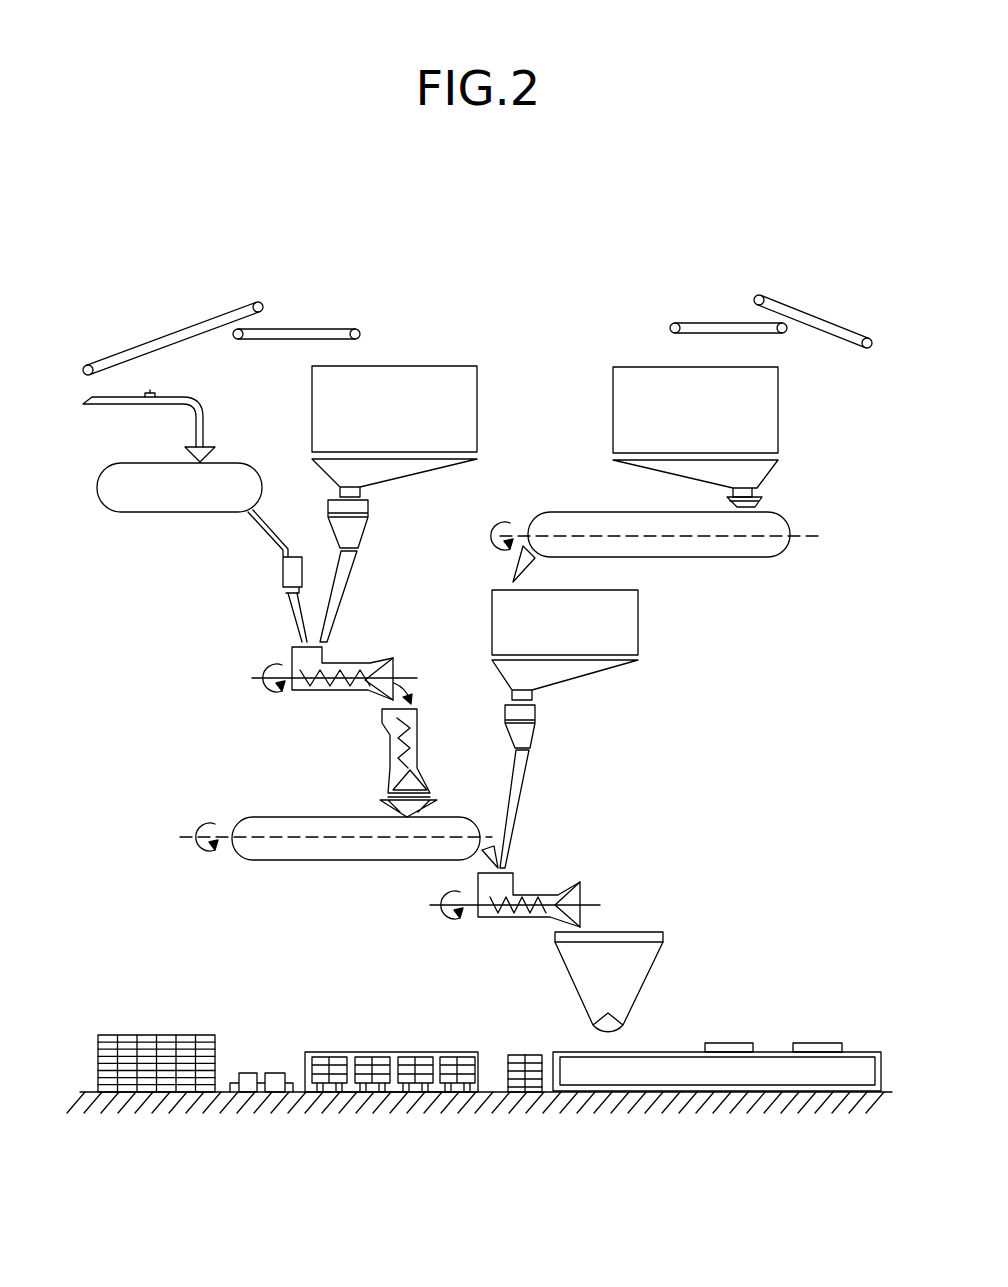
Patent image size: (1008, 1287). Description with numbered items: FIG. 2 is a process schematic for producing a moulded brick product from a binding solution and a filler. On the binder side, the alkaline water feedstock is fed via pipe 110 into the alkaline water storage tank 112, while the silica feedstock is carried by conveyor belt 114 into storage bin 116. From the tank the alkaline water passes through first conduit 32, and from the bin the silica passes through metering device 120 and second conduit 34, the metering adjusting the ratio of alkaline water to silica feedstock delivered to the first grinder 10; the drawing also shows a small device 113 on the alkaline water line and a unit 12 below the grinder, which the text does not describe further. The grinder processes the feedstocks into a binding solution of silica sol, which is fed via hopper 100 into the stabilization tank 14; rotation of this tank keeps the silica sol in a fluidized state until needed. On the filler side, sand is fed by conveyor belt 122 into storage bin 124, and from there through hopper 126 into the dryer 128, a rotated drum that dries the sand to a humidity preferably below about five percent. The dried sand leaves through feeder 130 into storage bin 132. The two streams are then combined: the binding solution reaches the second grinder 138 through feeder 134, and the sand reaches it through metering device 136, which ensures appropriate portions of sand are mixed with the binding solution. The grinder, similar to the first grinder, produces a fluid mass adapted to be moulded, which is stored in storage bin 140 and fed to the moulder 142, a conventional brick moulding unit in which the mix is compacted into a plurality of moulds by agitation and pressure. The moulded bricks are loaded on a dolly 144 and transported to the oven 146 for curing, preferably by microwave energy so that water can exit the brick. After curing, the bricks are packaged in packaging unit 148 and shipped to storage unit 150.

The first grinder 10 is at (355, 668).
The mixer 12 is at (392, 752).
The stabilization tank 14 is at (235, 818).
The first conduit 32 is at (292, 620).
The second conduit 34 is at (345, 600).
The hopper 100 is at (385, 810).
The pipe 110 is at (130, 407).
The alkaline water storage tank 112 is at (205, 500).
The metering device 113 is at (287, 575).
The conveyor belt 114 is at (280, 318).
The storage bin 116 is at (415, 375).
The metering device 120 is at (370, 530).
The conveyor belt 122 is at (780, 280).
The storage bin 124 is at (633, 375).
The hopper 126 is at (765, 503).
The dryer 128 is at (770, 550).
The feeder 130 is at (535, 572).
The storage bin 132 is at (625, 630).
The feeder 134 is at (485, 903).
The metering device 136 is at (525, 735).
The grinder 138 is at (545, 890).
The storage bin 140 is at (620, 945).
The moulder 142 is at (640, 1065).
The dolly 144 is at (525, 1052).
The oven 146 is at (420, 1050).
The packaging unit 148 is at (270, 1070).
The storage unit 150 is at (183, 1035).